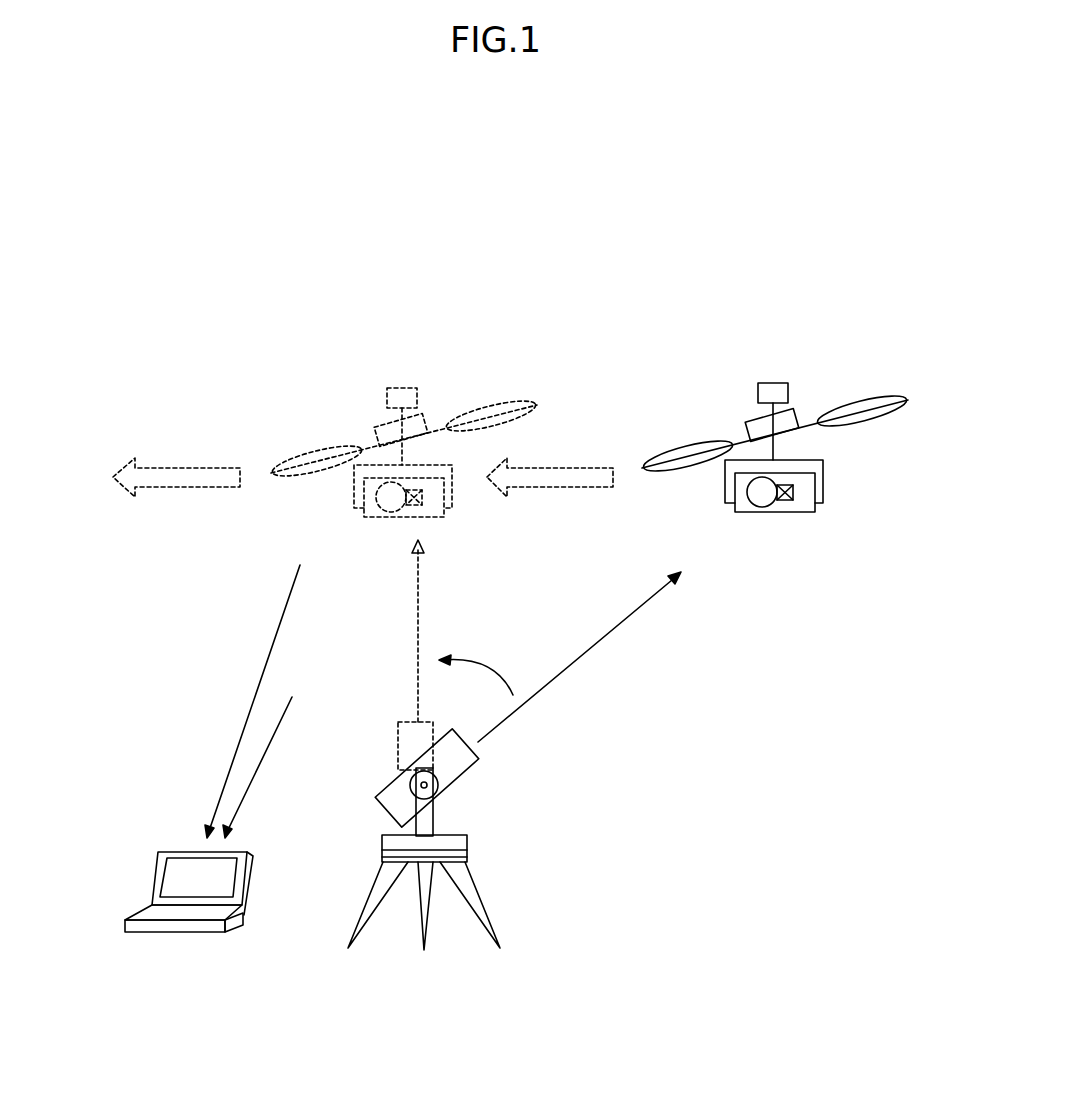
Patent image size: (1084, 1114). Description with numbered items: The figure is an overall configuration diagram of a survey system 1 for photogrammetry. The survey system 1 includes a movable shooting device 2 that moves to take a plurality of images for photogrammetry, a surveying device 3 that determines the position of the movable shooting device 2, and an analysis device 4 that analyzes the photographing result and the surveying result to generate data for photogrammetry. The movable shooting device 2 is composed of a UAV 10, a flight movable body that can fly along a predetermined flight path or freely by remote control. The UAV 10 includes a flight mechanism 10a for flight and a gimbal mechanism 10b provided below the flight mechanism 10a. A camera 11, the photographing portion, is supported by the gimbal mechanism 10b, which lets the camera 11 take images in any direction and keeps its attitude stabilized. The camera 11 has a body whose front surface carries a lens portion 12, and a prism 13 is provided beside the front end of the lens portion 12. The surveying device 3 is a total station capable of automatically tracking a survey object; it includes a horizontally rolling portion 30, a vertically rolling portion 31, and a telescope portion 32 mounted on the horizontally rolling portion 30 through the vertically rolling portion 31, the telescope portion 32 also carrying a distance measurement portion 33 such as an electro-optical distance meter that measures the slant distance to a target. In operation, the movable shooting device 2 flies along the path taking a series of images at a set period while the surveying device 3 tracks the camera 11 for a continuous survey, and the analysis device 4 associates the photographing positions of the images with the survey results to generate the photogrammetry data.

The survey system 1 is at (623, 243).
The movable shooting device 2 is at (775, 358).
The surveying device 3 is at (365, 776).
The analysis device 4 is at (175, 826).
The UAV 10 is at (808, 410).
The flight mechanism 10a is at (755, 421).
The gimbal mechanism 10b is at (724, 476).
The camera 11 is at (817, 510).
The lens portion 12 is at (750, 508).
The prism 13 is at (783, 503).
The horizontally rolling portion 30 is at (466, 835).
The vertically rolling portion 31 is at (386, 802).
The telescope portion 32 is at (462, 772).
The distance measurement portion 33 is at (415, 746).